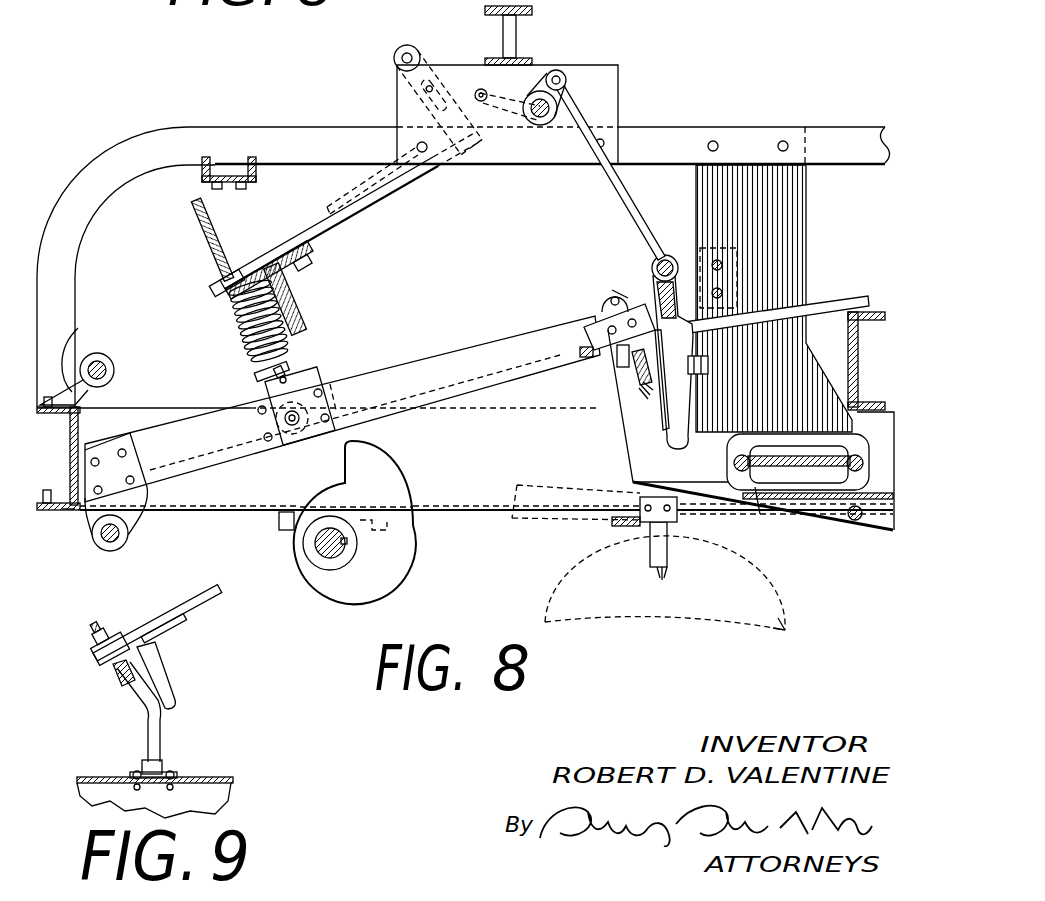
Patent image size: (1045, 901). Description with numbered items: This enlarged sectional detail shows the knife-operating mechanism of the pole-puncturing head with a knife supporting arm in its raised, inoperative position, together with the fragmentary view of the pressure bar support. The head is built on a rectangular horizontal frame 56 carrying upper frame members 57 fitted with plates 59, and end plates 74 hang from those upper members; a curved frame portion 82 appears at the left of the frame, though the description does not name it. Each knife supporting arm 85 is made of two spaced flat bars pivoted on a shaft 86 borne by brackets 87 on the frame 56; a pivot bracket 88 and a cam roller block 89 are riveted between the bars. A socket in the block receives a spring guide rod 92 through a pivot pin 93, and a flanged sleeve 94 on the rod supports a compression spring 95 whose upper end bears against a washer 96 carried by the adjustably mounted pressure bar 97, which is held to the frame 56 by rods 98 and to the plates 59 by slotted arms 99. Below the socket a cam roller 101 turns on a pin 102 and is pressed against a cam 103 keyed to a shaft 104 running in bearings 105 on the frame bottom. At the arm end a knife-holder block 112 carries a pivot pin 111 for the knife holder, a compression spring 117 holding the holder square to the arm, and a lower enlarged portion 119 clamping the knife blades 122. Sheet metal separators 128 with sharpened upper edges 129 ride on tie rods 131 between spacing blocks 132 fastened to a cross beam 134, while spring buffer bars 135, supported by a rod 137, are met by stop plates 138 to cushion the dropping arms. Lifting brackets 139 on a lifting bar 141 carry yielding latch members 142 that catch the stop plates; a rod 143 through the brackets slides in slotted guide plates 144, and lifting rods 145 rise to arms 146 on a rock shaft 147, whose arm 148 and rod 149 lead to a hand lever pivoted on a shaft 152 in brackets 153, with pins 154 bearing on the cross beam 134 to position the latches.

In FIG. 8, the rectangular horizontal frame 56 is at (68, 447).
In FIG. 9, the rectangular horizontal frame 56 is at (213, 781).
In FIG. 8, the upper frame member 57 is at (834, 128).
In FIG. 8, the plate 59 is at (452, 65).
In FIG. 8, the plate 74 is at (780, 222).
In FIG. 8, the curved frame member 82 is at (181, 168).
In FIG. 8, the knife supporting arm 85 is at (465, 338).
In FIG. 8, the shaft 86 is at (106, 546).
In FIG. 8, the bracket 87 is at (68, 515).
In FIG. 8, the pivot bracket 88 is at (130, 525).
In FIG. 8, the cam roller block 89 is at (326, 376).
In FIG. 8, the spring guide rod 92 is at (204, 229).
In FIG. 8, the pivot pin 93 is at (289, 378).
In FIG. 8, the flanged sleeve 94 is at (256, 376).
In FIG. 8, the compression spring 95 is at (246, 349).
In FIG. 8, the washer 96 is at (222, 291).
In FIG. 8, the pressure bar 97 is at (283, 294).
In FIG. 9, the pressure bar 97 is at (174, 638).
In FIG. 9, the rod 98 is at (160, 724).
In FIG. 8, the slotted arm 99 is at (403, 52).
In FIG. 9, the slotted arm 99 is at (213, 605).
In FIG. 8, the cam roller 101 is at (288, 430).
In FIG. 8, the pin 102 is at (340, 392).
In FIG. 8, the cam 103 is at (326, 600).
In FIG. 8, the shaft 104 is at (347, 550).
In FIG. 8, the bearing 105 is at (281, 532).
In FIG. 8, the pivot pin 111 is at (613, 292).
In FIG. 8, the knife-holder block 112 is at (604, 302).
In FIG. 8, the compression spring 117 is at (585, 331).
In FIG. 8, the lower enlarged portion 119 is at (630, 378).
In FIG. 8, the knife blade 122 is at (639, 395).
In FIG. 8, the separator 128 is at (626, 455).
In FIG. 8, the upper edge 129 is at (615, 360).
In FIG. 8, the tie rod 131 is at (746, 455).
In FIG. 8, the spacing block 132 is at (773, 456).
In FIG. 8, the cross beam 134 is at (858, 385).
In FIG. 8, the spring buffer bar 135 is at (757, 515).
In FIG. 8, the rod 137 is at (856, 523).
In FIG. 8, the stop plate 138 is at (690, 512).
In FIG. 8, the lifting bracket 139 is at (653, 267).
In FIG. 8, the lifting bar 141 is at (736, 307).
In FIG. 8, the latch member 142 is at (655, 410).
In FIG. 8, the rod 143 is at (664, 255).
In FIG. 8, the slotted guide plate 144 is at (676, 258).
In FIG. 8, the lifting rod 145 is at (616, 190).
In FIG. 8, the arm 146 is at (548, 72).
In FIG. 8, the rock shaft 147 is at (571, 103).
In FIG. 8, the arm 148 is at (515, 108).
In FIG. 8, the rod 149 is at (343, 190).
In FIG. 8, the shaft 152 is at (110, 366).
In FIG. 8, the bracket 153 is at (80, 333).
In FIG. 8, the pin 154 is at (853, 308).